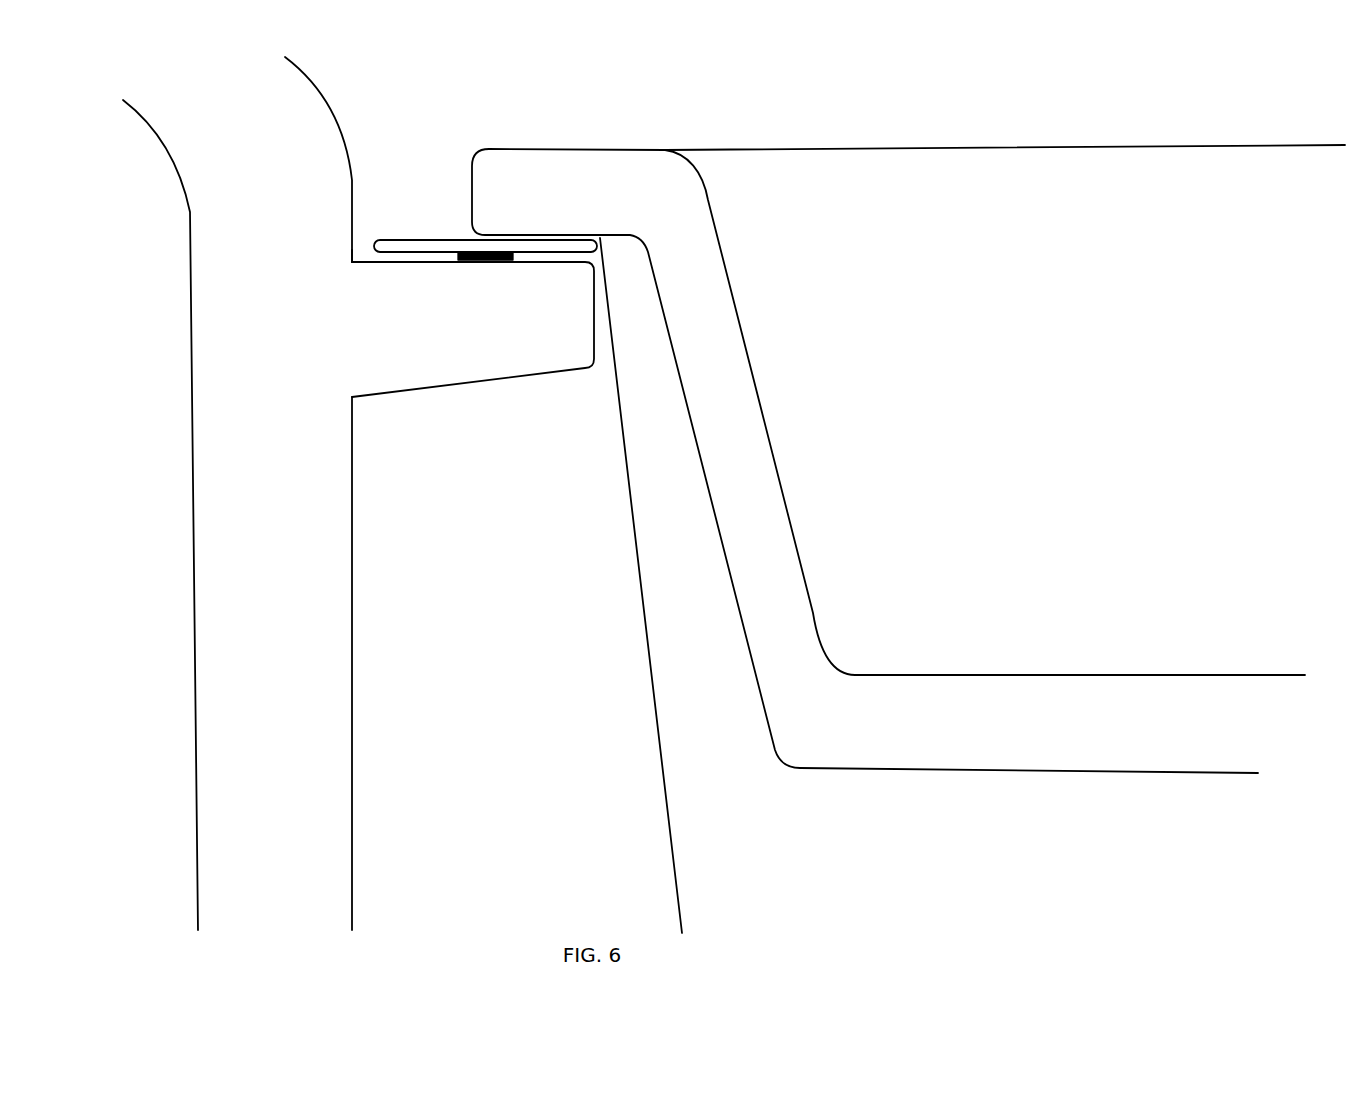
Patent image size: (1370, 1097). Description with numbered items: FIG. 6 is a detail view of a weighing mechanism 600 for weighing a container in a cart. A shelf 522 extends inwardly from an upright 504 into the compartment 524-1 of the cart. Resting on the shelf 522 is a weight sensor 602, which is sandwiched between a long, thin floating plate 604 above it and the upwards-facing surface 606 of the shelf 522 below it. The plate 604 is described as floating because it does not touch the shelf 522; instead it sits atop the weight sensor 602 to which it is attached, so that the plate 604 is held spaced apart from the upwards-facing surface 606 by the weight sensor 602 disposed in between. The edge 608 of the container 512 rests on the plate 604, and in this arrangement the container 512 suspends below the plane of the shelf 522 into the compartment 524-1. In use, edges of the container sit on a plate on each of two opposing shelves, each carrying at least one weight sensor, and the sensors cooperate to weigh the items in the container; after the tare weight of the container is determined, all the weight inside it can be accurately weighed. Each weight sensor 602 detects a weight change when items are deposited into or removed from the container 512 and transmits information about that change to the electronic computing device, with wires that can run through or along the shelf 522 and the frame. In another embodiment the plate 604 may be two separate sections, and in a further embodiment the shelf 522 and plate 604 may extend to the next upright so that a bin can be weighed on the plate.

The weighing mechanism 600 is at (418, 140).
The weight sensor 602 is at (500, 262).
The floating plate 604 is at (413, 253).
The upwards-facing surface 606 is at (364, 260).
The edge 608 is at (540, 170).
The container 512 is at (674, 170).
The shelf 522 is at (502, 363).
The upright 504 is at (205, 512).
The compartment 524-1 is at (399, 493).